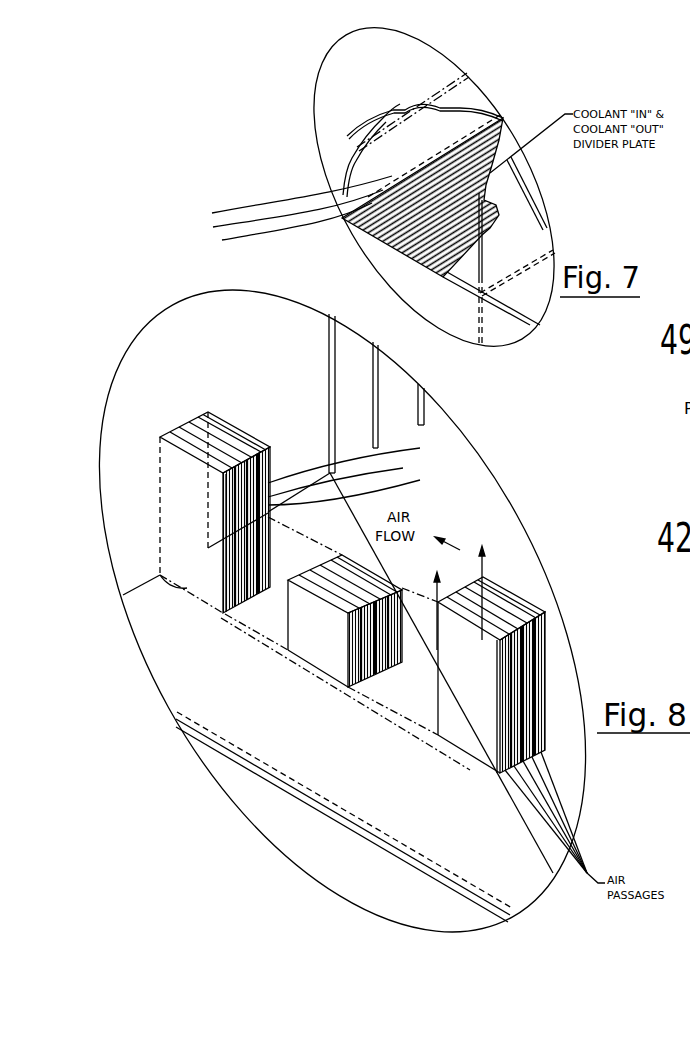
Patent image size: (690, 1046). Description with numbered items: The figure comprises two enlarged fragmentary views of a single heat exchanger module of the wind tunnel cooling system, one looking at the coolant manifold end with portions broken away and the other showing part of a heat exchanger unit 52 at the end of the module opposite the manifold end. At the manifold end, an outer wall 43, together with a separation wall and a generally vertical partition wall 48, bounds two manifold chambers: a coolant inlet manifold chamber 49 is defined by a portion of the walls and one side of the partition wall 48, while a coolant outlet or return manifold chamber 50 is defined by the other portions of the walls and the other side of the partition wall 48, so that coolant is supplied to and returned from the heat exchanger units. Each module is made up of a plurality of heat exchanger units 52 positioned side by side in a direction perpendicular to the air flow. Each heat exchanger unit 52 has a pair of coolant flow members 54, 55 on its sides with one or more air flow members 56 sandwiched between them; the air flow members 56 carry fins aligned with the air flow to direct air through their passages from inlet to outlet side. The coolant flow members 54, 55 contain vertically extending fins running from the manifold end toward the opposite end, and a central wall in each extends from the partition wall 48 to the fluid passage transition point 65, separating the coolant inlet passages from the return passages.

In FIG. 7, the outer wall 43 is at (370, 160).
In FIG. 7, the partition wall 48 is at (430, 235).
In FIG. 7, the coolant inlet manifold chamber 49 is at (428, 135).
In FIG. 7, the coolant outlet manifold chamber 50 is at (540, 212).
In FIG. 7, the heat exchanger unit 52 is at (281, 220).
In FIG. 8, the heat exchanger unit 52 is at (233, 418).
In FIG. 8, the coolant flow member 54 is at (222, 585).
In FIG. 8, the coolant flow member 55 is at (273, 587).
In FIG. 8, the air flow member 56 is at (364, 476).
In FIG. 8, the fluid passage transition point 65 is at (330, 473).